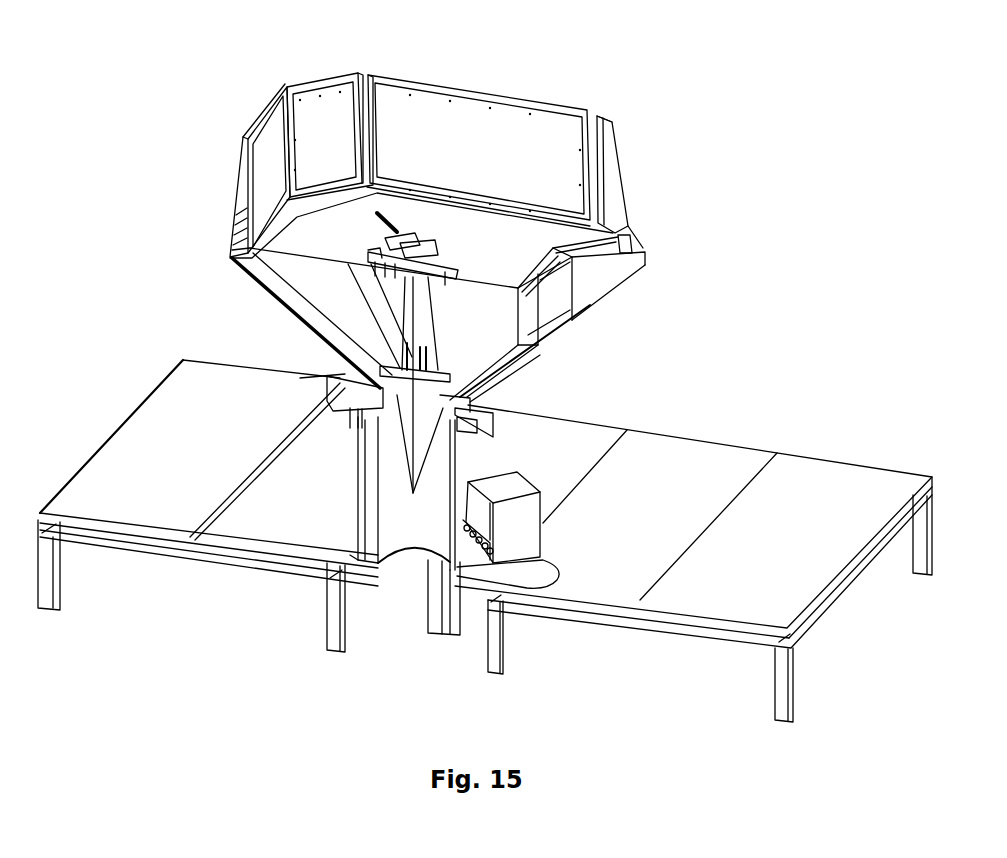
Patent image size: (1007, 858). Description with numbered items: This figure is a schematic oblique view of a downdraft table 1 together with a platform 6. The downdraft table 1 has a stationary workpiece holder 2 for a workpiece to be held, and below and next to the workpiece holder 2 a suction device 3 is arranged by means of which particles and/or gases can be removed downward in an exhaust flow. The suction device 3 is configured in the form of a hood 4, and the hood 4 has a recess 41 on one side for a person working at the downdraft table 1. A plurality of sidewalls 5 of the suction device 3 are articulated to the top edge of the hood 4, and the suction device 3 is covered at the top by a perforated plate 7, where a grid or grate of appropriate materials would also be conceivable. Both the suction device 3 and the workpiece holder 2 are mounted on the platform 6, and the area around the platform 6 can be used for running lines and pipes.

The downdraft table 1 is at (816, 136).
The workpiece holder 2 is at (433, 247).
The suction device 3 is at (230, 260).
The hood 4 is at (293, 283).
The recess 41 is at (590, 275).
The sidewalls 5 is at (383, 70).
The platform 6 is at (703, 590).
The perforated plate 7 is at (483, 287).